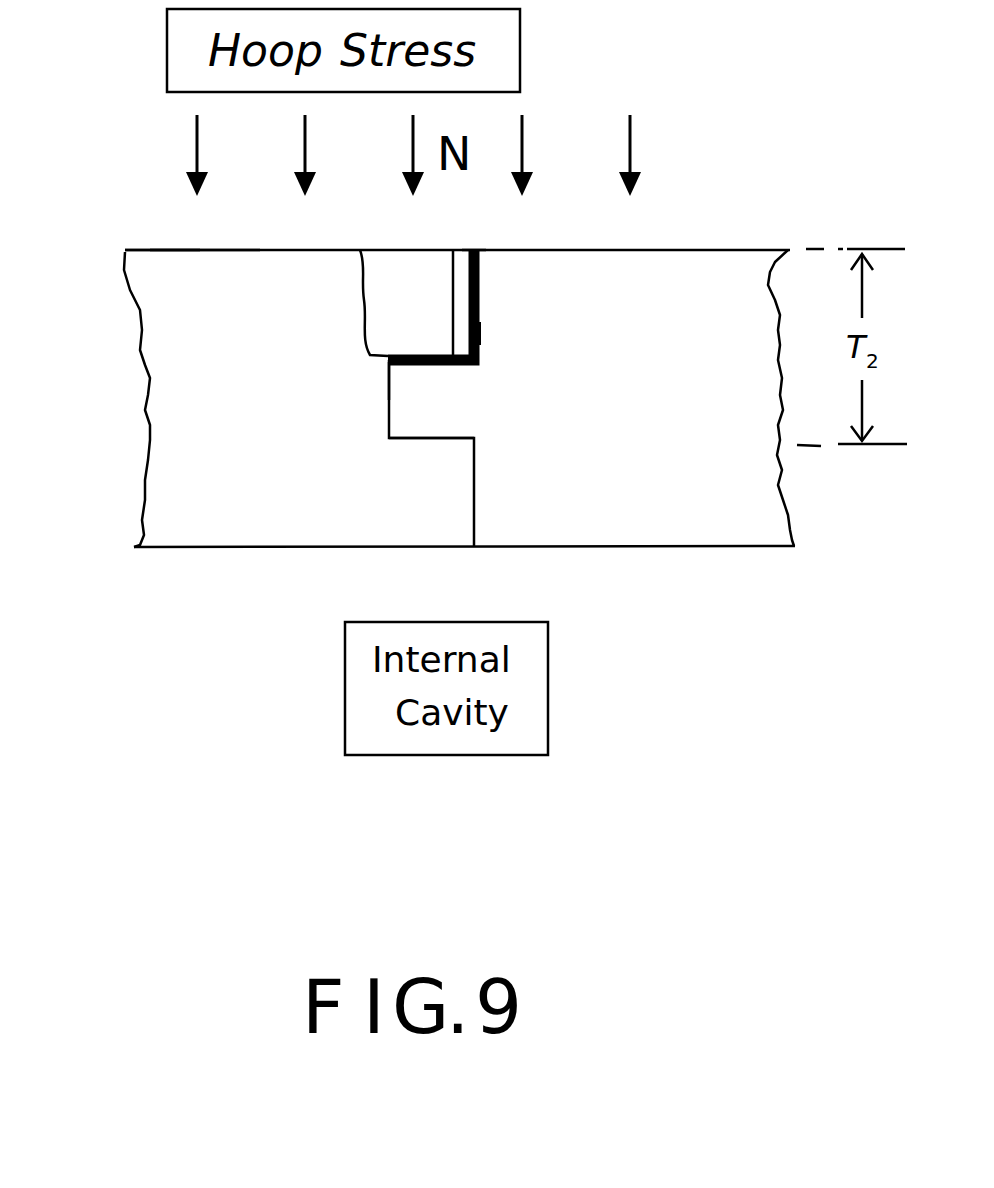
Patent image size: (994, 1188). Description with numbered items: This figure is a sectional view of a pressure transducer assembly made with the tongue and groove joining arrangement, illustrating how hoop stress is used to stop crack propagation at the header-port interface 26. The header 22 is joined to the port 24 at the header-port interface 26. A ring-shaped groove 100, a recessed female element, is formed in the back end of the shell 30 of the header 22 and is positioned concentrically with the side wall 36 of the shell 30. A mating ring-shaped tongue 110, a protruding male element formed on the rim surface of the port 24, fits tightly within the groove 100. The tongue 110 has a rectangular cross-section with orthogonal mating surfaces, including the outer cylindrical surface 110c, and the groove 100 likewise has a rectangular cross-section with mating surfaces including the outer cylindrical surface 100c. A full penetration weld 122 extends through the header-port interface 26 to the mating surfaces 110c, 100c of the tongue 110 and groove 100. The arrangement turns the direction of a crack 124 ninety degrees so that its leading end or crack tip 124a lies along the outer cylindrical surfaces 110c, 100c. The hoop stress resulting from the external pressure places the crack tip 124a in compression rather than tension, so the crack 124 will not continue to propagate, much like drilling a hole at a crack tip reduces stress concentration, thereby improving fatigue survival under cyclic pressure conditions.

The header 22 is at (126, 374).
The port 24 is at (648, 240).
The header-port interface 26 is at (458, 236).
The shell 30 is at (148, 251).
The side wall 36 is at (183, 250).
The groove 100 is at (490, 420).
The tongue mating surface 100c is at (402, 383).
The tongue 110 is at (426, 404).
The groove mating surface 110c is at (480, 327).
The full penetration weld 122 is at (480, 288).
The crack 124 is at (452, 293).
The crack tip 124a is at (360, 250).